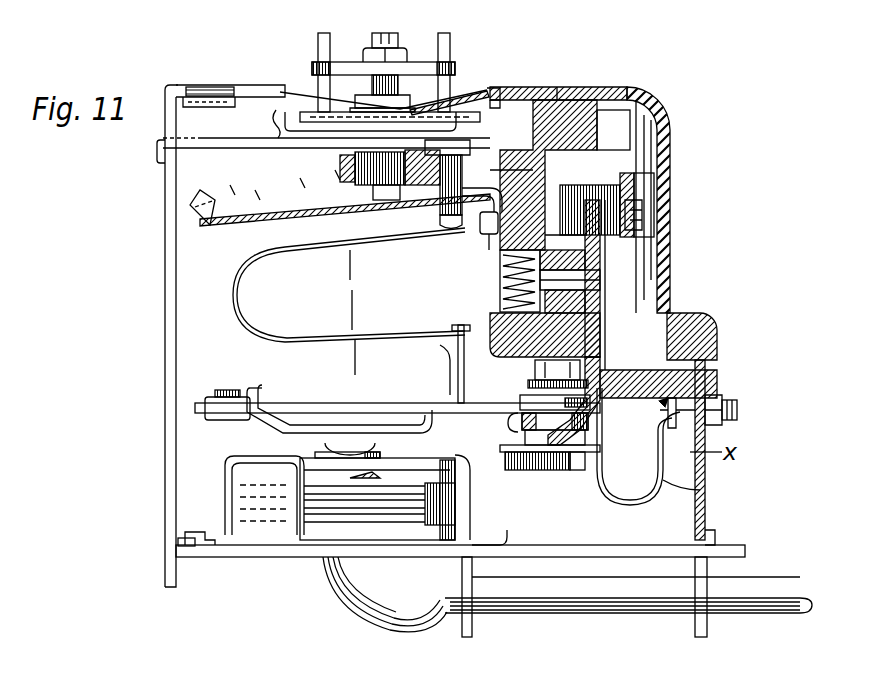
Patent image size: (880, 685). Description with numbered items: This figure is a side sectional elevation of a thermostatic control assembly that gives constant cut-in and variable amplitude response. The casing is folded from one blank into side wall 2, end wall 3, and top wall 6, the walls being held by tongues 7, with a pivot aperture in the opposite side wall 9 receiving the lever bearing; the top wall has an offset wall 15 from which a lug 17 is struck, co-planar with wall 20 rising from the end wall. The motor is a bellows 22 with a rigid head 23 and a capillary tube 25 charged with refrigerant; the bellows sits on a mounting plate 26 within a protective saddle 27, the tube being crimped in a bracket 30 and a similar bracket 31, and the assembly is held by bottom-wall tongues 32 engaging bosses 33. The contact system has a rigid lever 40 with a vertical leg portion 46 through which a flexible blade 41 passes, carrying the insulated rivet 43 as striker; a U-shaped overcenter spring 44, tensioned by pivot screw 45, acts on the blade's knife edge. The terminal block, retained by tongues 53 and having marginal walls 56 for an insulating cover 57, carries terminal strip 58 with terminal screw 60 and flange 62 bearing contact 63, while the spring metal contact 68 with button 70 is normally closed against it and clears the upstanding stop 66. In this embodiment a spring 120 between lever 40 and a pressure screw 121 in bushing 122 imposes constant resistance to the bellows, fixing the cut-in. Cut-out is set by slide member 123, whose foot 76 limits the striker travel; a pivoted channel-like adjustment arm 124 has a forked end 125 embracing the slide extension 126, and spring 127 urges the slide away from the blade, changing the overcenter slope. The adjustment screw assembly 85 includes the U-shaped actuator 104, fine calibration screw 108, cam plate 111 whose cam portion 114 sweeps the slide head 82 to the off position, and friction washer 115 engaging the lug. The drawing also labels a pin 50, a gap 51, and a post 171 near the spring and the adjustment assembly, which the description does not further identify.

The side wall 2 is at (190, 323).
The end wall 3 is at (165, 252).
The top wall 6 is at (272, 128).
The tongue 7 is at (705, 520).
The opposite side wall 9 is at (240, 560).
The offset wall 15 is at (557, 95).
The lug 17 is at (497, 98).
The wall 20 is at (282, 90).
The expansible and contractable chamber 22 is at (320, 545).
The rigid head 23 is at (380, 455).
The tube 25 is at (612, 613).
The mounting plate 26 is at (335, 548).
The saddle 27 is at (232, 462).
The bracket 30 is at (445, 630).
The bracket 31 is at (707, 628).
The tongue 32 is at (185, 548).
The boss 33 is at (200, 555).
The rigid lever 40 is at (280, 405).
The contact-actuating blade 41 is at (325, 410).
The large-headed rivet 43 is at (525, 405).
The overcenter spring 44 is at (705, 495).
The pivot screw 45 is at (737, 410).
The vertical leg portion 46 is at (458, 390).
The pin 50 is at (462, 322).
The gap 51 is at (450, 360).
The tongue 53 is at (598, 97).
The marginal wall 56 is at (668, 270).
The insulating cover piece 57 is at (660, 190).
The terminal strip 58 is at (600, 313).
The terminal screw 60 is at (645, 222).
The flange 62 is at (525, 420).
The contact 63 is at (600, 470).
The stop 66 is at (540, 472).
The spring metal contact 68 is at (510, 455).
The contact button 70 is at (560, 472).
The foot 76 is at (535, 370).
The head 82 is at (612, 122).
The adjustment screw assembly 85 is at (330, 185).
The U-shaped actuator 104 is at (452, 46).
The calibration screw 108 is at (385, 38).
The cam plate 111 is at (285, 140).
The cam portion 114 is at (480, 100).
The friction washer 115 is at (345, 100).
The spring 120 is at (310, 340).
The pressure screw 121 is at (438, 205).
The bushing 122 is at (340, 165).
The slide member 123 is at (600, 337).
The adjustment arm 124 is at (255, 228).
The forked end 125 is at (500, 278).
The extension 126 is at (480, 225).
The spring 127 is at (500, 300).
The post 171 is at (318, 70).